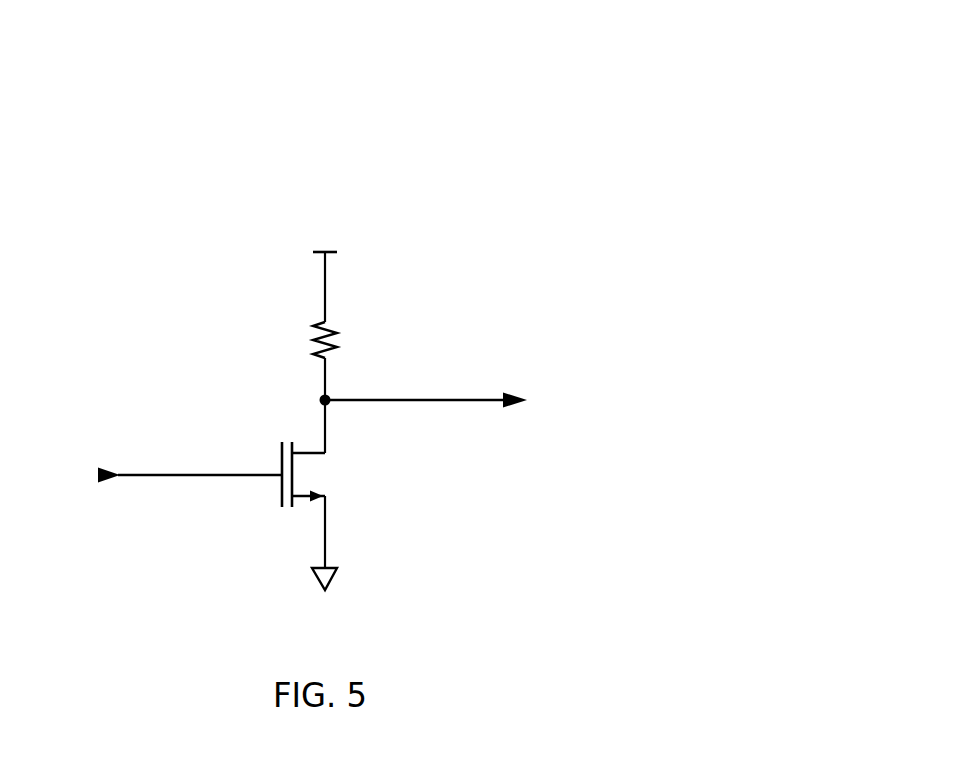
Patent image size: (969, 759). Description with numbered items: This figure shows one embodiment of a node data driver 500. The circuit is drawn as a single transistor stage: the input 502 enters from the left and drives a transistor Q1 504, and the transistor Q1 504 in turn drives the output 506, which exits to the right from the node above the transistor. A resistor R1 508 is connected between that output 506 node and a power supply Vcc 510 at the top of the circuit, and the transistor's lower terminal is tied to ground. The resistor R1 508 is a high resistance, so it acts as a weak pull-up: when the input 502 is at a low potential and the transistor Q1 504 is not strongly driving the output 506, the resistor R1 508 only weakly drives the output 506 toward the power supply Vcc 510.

The node data driver 500 is at (735, 77).
The input 502 is at (190, 477).
The transistor Q1 504 is at (368, 495).
The output 506 is at (489, 417).
The resistor R1 508 is at (395, 357).
The power supply Vcc 510 is at (366, 260).